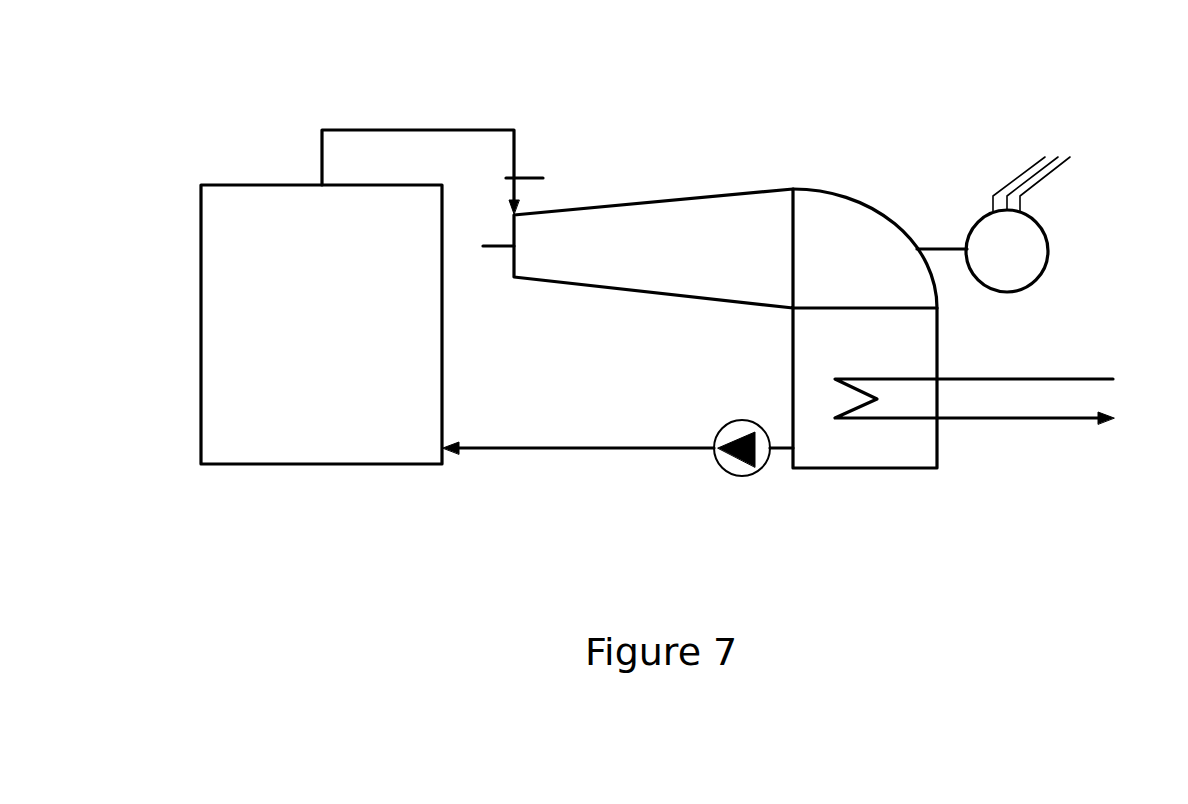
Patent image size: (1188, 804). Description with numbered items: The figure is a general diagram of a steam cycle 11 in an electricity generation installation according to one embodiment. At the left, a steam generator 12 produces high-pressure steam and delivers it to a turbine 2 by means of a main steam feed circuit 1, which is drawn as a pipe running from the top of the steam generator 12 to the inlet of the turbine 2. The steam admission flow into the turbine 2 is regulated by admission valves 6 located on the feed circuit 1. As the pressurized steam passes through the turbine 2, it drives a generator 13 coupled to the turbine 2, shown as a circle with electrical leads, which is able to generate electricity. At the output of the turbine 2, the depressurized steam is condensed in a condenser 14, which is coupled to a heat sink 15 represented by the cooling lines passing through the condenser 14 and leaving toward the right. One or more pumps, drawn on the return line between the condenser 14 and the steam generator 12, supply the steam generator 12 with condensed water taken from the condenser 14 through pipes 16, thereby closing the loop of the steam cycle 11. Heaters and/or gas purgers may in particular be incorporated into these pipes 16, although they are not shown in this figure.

The main steam feed circuit 1 is at (392, 127).
The turbine 2 is at (638, 248).
The admission valves 6 is at (527, 172).
The steam cycle 11 is at (772, 102).
The steam generator 12 is at (321, 324).
The generator 13 is at (1028, 244).
The condenser 14 is at (865, 388).
The heat sink 15 is at (982, 423).
The pipes 16 is at (525, 448).